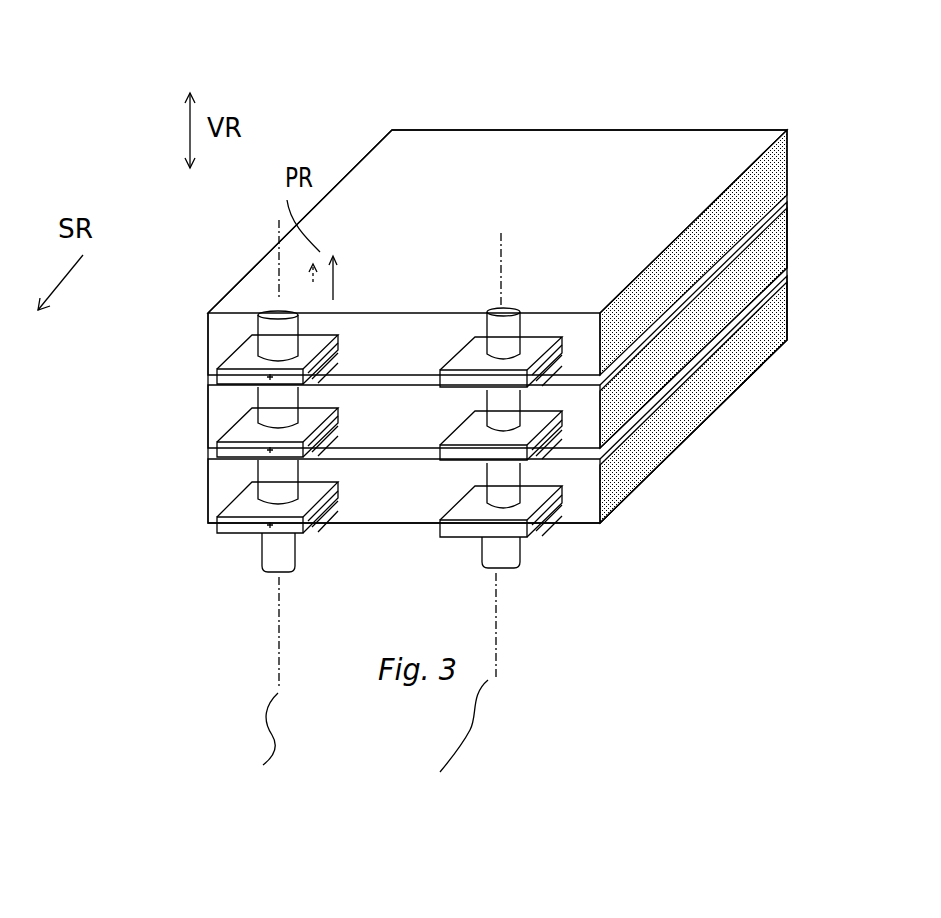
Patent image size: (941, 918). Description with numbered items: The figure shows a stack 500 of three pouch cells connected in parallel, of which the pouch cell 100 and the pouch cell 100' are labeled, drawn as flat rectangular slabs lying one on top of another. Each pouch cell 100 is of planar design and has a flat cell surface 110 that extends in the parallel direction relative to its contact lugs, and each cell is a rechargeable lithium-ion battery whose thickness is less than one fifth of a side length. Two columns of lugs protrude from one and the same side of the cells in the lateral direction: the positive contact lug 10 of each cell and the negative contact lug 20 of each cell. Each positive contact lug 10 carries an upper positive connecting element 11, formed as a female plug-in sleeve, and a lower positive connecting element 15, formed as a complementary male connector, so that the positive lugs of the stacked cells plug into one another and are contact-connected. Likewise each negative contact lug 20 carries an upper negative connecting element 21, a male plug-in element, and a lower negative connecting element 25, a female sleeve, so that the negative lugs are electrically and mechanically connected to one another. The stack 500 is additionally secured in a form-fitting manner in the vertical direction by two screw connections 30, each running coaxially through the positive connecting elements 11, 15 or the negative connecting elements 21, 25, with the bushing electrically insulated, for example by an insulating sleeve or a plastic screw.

The positive contact lug 10 is at (238, 362).
The upper positive connecting element 11 is at (265, 340).
The lower positive connecting element 15 is at (268, 555).
The negative contact lug 20 is at (542, 527).
The upper negative connecting element 21 is at (480, 437).
The lower negative connecting element 25 is at (505, 560).
The screw connection 30 is at (361, 749).
The pouch cell 100 is at (567, 290).
The pouch cell 100' is at (569, 298).
The cell surface 110 is at (558, 160).
The stack 500 is at (870, 537).